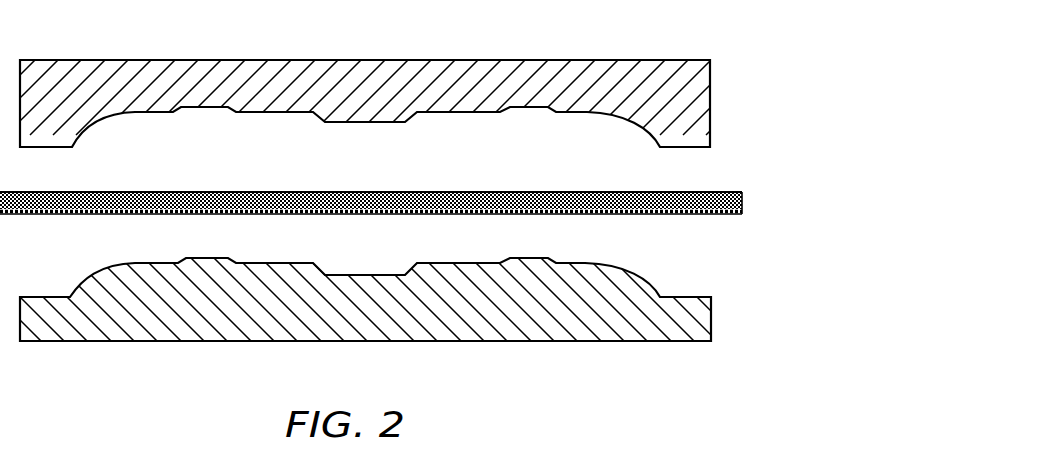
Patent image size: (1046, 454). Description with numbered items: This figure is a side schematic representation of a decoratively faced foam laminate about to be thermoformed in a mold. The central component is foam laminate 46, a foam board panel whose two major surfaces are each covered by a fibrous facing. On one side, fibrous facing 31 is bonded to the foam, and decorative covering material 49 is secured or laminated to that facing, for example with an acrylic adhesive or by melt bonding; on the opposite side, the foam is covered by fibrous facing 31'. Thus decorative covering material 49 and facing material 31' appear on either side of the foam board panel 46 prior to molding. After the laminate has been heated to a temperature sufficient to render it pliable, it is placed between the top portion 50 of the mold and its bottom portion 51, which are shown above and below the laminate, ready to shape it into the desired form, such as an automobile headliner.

The top portion of the mold 50 is at (632, 60).
The bottom portion of the mold 51 is at (636, 341).
The decorative covering material 49 is at (410, 214).
The foam laminate 46 is at (742, 200).
The fibrous facing 31 is at (409, 230).
The fibrous facing 31' is at (410, 159).